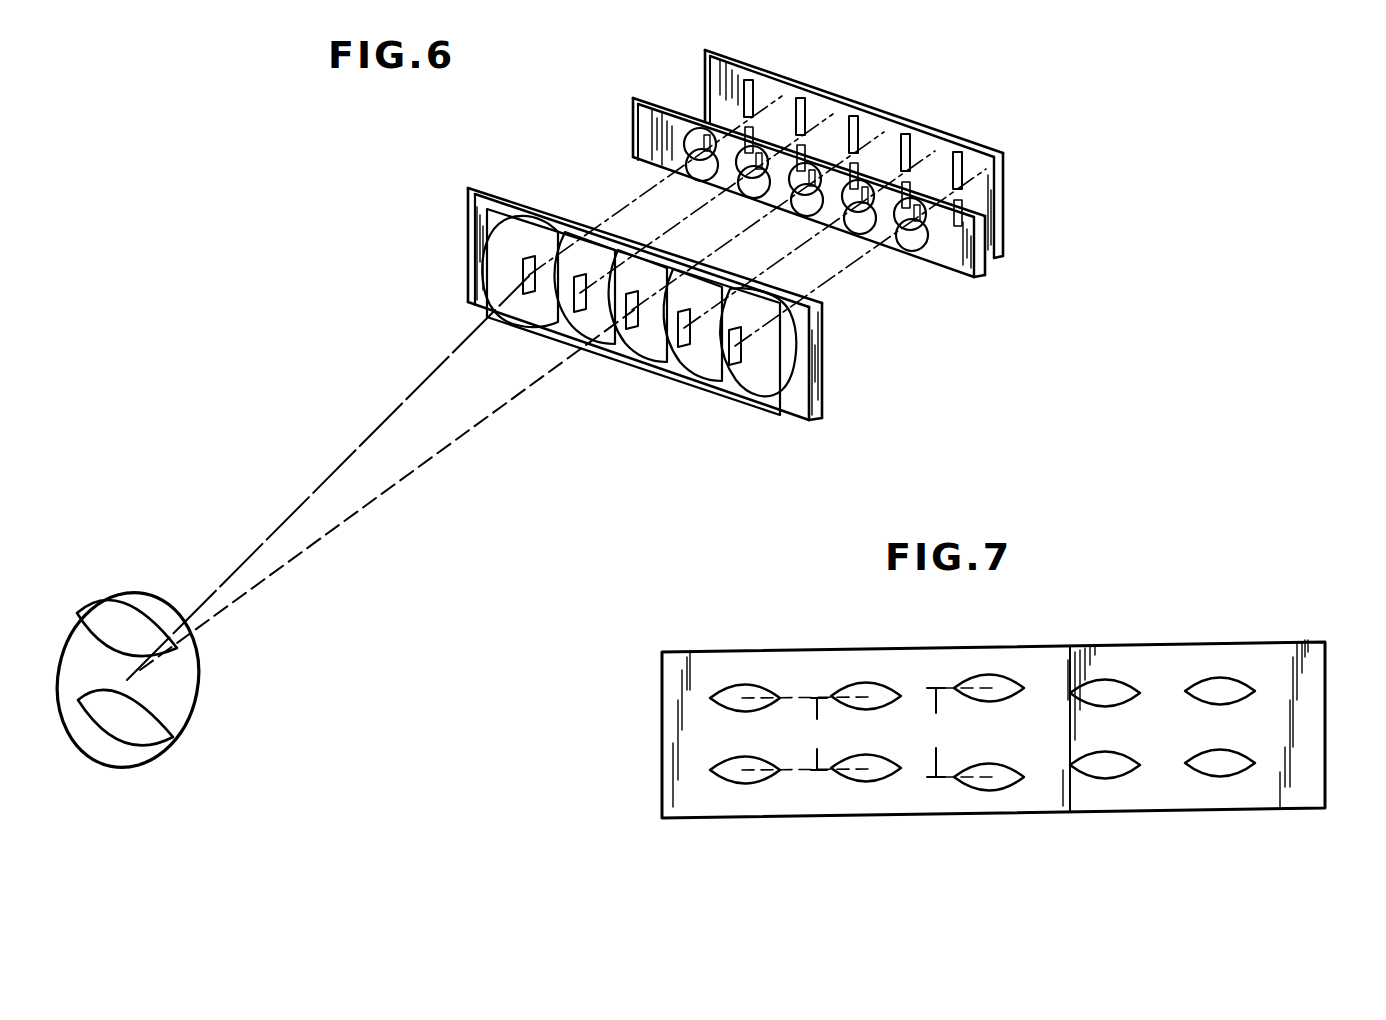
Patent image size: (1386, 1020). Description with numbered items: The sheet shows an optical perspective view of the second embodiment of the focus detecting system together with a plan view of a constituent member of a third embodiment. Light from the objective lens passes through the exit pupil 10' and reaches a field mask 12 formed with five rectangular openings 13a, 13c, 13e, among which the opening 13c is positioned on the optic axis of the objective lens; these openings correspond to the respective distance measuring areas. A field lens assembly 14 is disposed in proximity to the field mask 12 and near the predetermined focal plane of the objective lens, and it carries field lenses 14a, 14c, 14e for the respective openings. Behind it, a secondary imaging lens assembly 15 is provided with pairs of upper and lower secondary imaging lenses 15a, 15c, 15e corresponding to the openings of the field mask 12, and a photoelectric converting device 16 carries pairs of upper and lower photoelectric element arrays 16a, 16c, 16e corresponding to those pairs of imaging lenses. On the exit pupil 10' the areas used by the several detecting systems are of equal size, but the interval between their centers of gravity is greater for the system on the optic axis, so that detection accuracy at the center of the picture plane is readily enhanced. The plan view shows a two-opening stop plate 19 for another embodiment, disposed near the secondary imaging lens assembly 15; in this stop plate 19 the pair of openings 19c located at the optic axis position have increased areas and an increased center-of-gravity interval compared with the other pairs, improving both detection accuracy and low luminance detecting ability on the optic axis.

In FIG. 6, the exit pupil 10' is at (163, 679).
In FIG. 6, the field mask 12 is at (652, 353).
In FIG. 6, the rectangular opening 13a is at (529, 295).
In FIG. 6, the rectangular opening 13c is at (634, 331).
In FIG. 6, the rectangular opening 13e is at (737, 366).
In FIG. 6, the field lens assembly 14 is at (822, 389).
In FIG. 6, the field lens 14a is at (527, 208).
In FIG. 6, the field lens 14c is at (657, 248).
In FIG. 6, the field lens 14e is at (750, 337).
In FIG. 6, the secondary imaging lens assembly 15 is at (983, 275).
In FIG. 6, the pair of secondary imaging lenses 15a is at (706, 179).
In FIG. 6, the pair of secondary imaging lenses 15c is at (809, 214).
In FIG. 6, the pair of secondary imaging lenses 15e is at (918, 249).
In FIG. 6, the photoelectric converting device 16 is at (1005, 243).
In FIG. 6, the pair of photoelectric element arrays 16a is at (747, 82).
In FIG. 6, the pair of photoelectric element arrays 16c is at (851, 117).
In FIG. 6, the pair of photoelectric element arrays 16e is at (955, 152).
In FIG. 7, the two-opening stop plate 19 is at (1305, 700).
In FIG. 7, the pair of openings 19c is at (1005, 772).